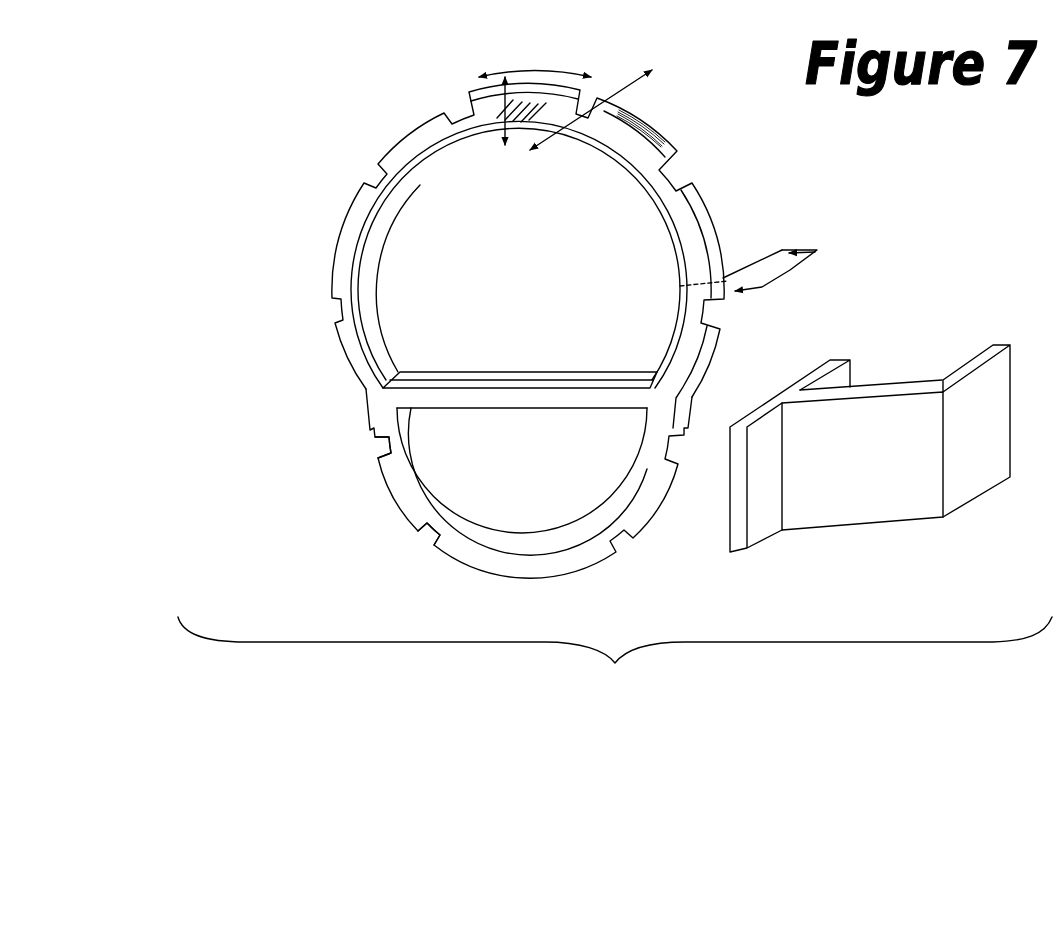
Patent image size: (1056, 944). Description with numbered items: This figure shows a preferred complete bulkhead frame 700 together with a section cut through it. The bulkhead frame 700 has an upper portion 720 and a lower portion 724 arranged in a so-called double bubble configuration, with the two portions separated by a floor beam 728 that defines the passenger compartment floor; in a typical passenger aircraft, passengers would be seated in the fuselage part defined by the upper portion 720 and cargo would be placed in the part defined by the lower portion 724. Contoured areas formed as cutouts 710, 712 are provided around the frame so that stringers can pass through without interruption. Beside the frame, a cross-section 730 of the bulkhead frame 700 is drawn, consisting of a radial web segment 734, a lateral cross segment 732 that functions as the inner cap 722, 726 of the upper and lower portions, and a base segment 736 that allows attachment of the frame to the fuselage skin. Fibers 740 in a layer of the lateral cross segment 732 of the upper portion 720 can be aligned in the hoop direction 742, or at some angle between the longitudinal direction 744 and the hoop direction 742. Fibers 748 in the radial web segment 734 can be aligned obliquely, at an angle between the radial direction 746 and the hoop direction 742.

The bulkhead frame 700 is at (789, 198).
The cutout 710 is at (372, 440).
The cutout 712 is at (420, 540).
The upper portion 720 is at (331, 245).
The inner cap 722 is at (380, 313).
The lower portion 724 is at (379, 513).
The inner cap 726 is at (444, 502).
The floor beam 728 is at (482, 409).
The cross-section 730 is at (884, 406).
The lateral cross segment 732 is at (735, 553).
The radial web segment 734 is at (855, 523).
The base segment 736 is at (977, 495).
The fibers 740 is at (669, 144).
The hoop direction 742 is at (540, 67).
The longitudinal direction 744 is at (597, 99).
The radial direction 746 is at (505, 132).
The fibers 748 is at (538, 114).